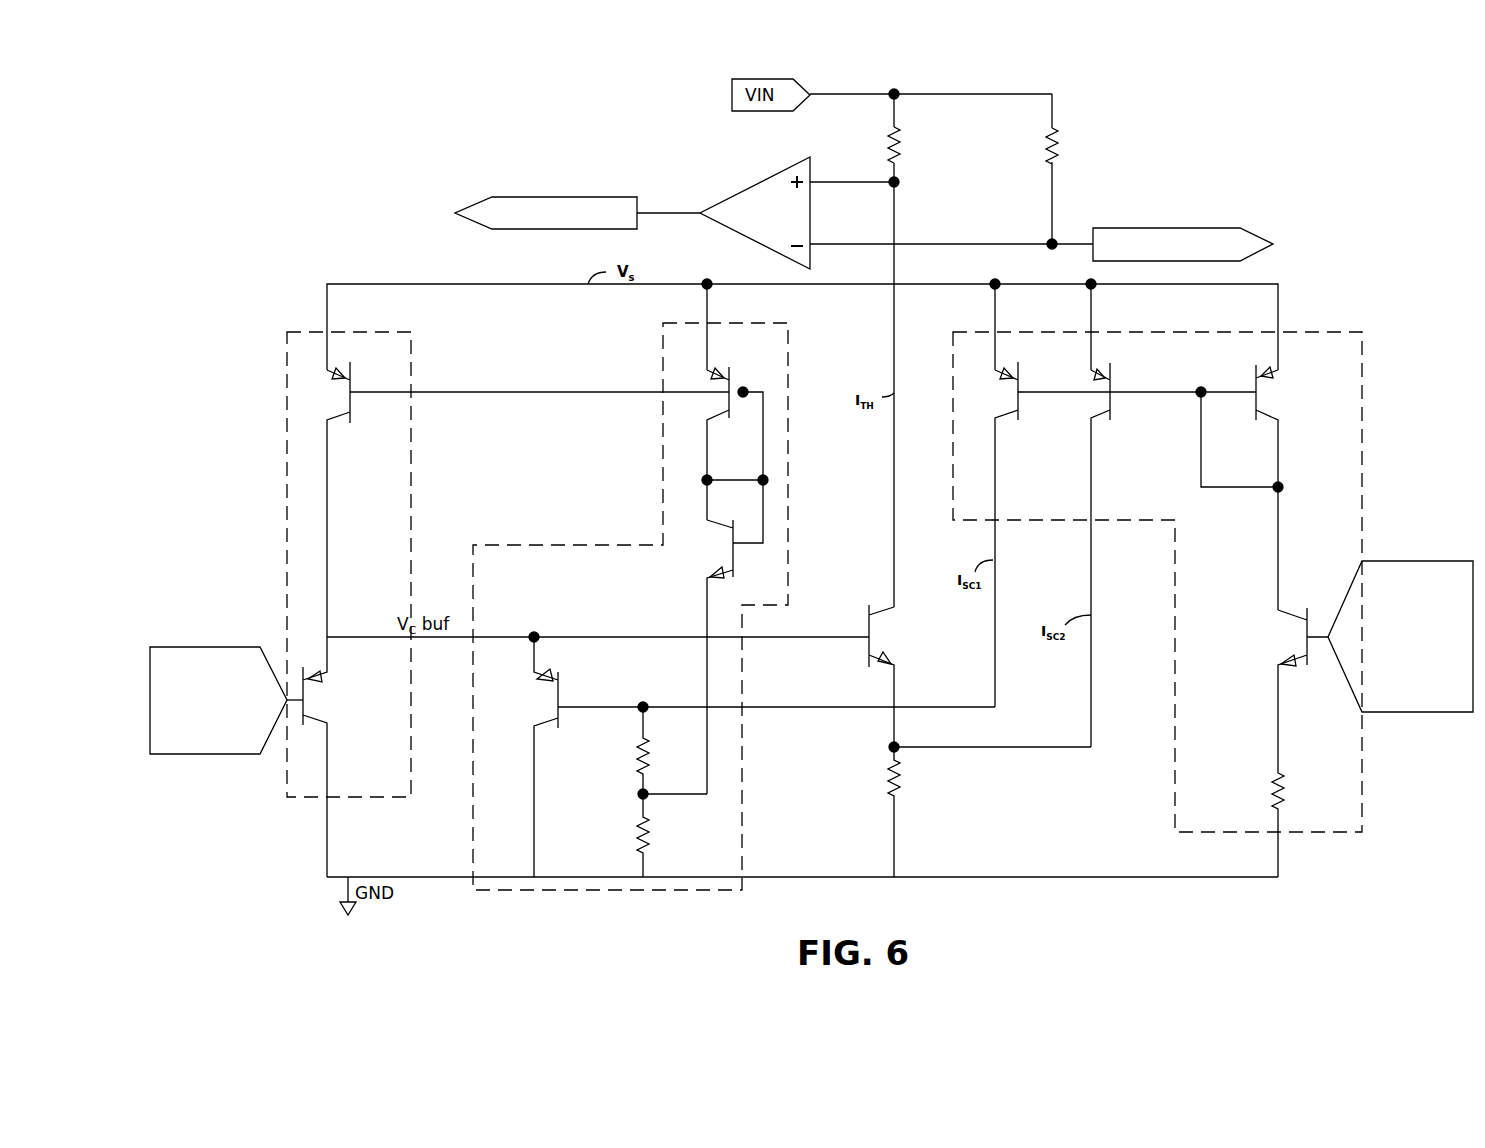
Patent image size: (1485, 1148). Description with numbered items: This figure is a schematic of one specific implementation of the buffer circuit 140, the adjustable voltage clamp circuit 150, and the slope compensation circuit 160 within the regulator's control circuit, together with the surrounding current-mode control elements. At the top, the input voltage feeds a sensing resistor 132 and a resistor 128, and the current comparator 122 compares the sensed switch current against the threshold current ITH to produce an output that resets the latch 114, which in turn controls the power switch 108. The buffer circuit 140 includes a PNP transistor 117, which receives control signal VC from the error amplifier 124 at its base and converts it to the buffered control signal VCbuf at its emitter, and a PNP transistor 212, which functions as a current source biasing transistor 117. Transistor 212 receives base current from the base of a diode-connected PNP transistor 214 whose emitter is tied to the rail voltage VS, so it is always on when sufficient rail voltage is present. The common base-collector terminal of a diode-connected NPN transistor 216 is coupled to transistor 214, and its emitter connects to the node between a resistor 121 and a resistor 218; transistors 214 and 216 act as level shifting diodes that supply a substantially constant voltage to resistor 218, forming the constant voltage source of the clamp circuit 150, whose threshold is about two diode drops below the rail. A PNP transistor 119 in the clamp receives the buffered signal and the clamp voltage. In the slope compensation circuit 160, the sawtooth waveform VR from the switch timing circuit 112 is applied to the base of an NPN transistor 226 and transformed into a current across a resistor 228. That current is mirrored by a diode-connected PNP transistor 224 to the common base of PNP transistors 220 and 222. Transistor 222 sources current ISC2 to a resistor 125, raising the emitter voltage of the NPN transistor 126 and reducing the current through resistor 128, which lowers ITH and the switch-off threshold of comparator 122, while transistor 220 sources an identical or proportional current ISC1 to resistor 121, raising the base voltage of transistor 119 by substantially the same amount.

The switch 108 is at (1183, 244).
The switch timing circuit 112 is at (1400, 636).
The latch 114 is at (577, 213).
The PNP transistor 117 is at (312, 708).
The PNP transistor 119 is at (580, 684).
The resistor 121 is at (640, 761).
The current comparator 122 is at (757, 182).
The error amplifier 124 is at (226, 700).
The resistor 125 is at (889, 789).
The NPN transistor 126 is at (866, 636).
The resistor 128 is at (886, 140).
The sensing resistor 132 is at (1044, 150).
The buffer circuit 140 is at (286, 454).
The adjustable voltage clamp circuit 150 is at (662, 440).
The slope compensation circuit 160 is at (1362, 374).
The PNP transistor 212 is at (352, 396).
The diode-connected PNP transistor 214 is at (735, 385).
The diode-connected NPN transistor 216 is at (725, 548).
The resistor 218 is at (640, 838).
The PNP transistor 220 is at (1020, 397).
The PNP transistor 222 is at (1112, 397).
The diode-connected PNP transistor 224 is at (1254, 393).
The NPN transistor 226 is at (1308, 632).
The resistor 228 is at (1275, 798).